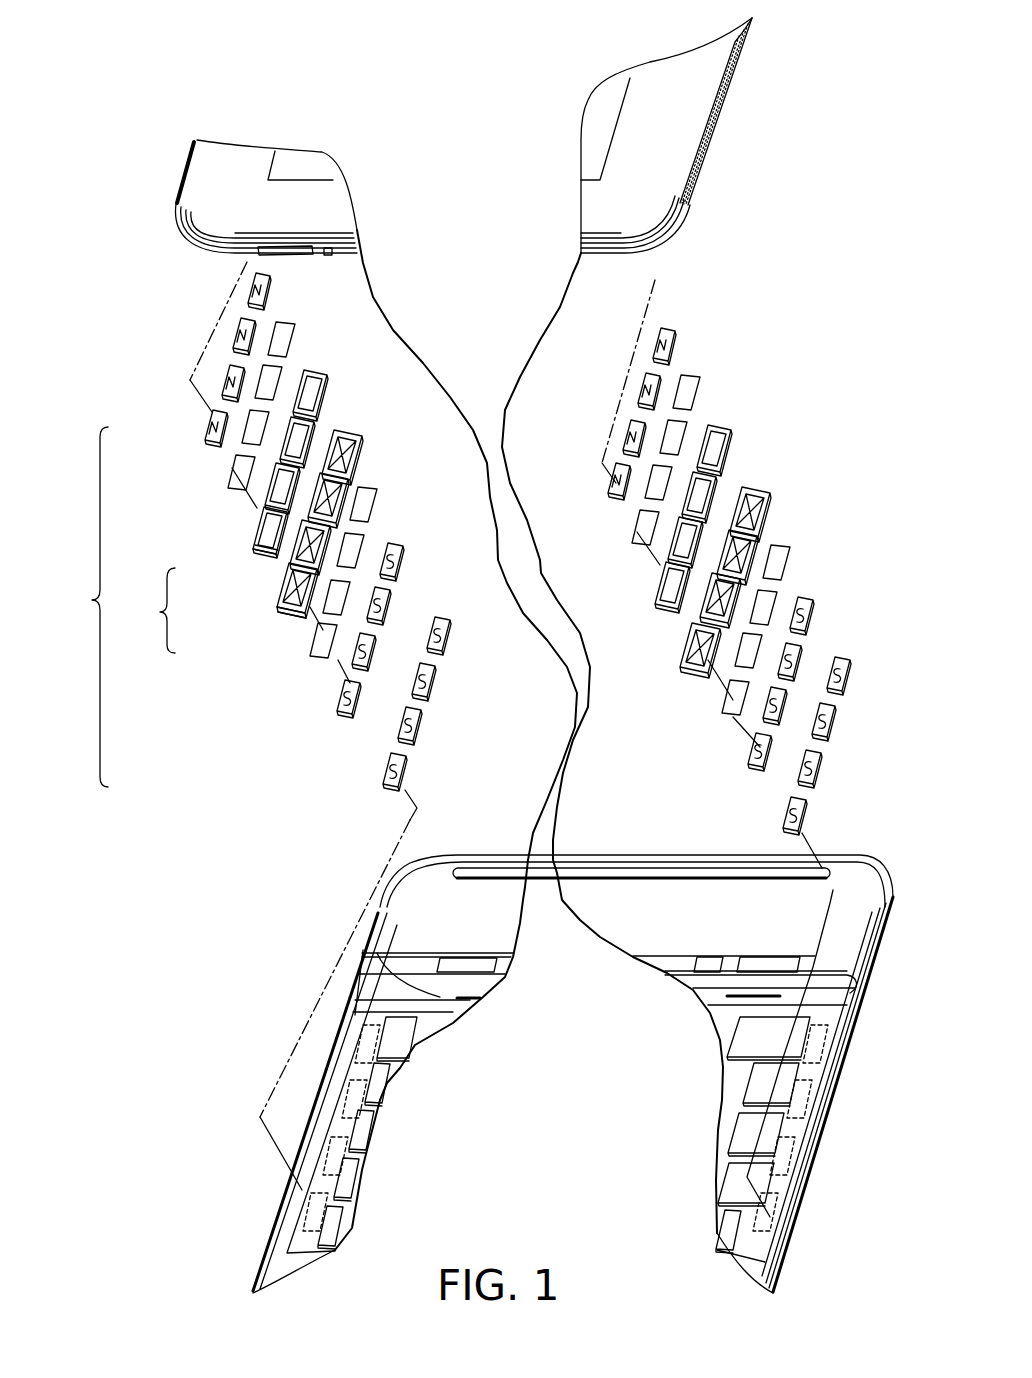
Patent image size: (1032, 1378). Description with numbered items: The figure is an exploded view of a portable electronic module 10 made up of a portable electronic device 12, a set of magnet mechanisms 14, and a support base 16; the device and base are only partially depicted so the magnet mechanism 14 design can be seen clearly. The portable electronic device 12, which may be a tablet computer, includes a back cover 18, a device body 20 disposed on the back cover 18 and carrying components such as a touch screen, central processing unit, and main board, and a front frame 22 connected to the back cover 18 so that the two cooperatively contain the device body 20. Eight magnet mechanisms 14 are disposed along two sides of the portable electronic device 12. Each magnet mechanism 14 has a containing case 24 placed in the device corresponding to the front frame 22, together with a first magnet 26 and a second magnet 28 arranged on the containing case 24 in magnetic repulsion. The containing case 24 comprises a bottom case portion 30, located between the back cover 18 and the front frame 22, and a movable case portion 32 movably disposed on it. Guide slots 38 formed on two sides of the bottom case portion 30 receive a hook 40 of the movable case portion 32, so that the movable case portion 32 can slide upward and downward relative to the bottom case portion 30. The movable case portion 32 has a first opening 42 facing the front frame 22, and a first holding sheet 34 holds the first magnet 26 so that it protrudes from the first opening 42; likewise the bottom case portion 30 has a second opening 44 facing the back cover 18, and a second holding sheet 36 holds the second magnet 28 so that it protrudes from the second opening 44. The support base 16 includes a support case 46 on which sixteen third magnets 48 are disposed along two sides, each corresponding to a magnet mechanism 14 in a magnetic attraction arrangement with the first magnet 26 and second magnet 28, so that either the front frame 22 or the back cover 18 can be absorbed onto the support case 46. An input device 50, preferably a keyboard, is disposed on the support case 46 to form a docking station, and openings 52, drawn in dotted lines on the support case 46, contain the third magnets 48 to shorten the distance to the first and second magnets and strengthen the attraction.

The portable electronic module 10 is at (190, 75).
The portable electronic device 12 is at (740, 67).
The magnet mechanism 14 is at (92, 600).
The support base 16 is at (492, 855).
The back cover 18 is at (330, 256).
The device body 20 is at (313, 163).
The front frame 22 is at (228, 173).
The containing case 24 is at (160, 612).
The first magnet 26 is at (203, 437).
The second magnet 28 is at (337, 703).
The bottom case portion 30 is at (290, 612).
The movable case portion 32 is at (257, 545).
The first holding sheet 34 is at (230, 480).
The second holding sheet 36 is at (316, 658).
The guide slot 38 is at (290, 618).
The hook 40 is at (258, 549).
The first opening 42 is at (258, 520).
The second opening 44 is at (283, 600).
The support case 46 is at (497, 927).
The third magnet 48 is at (388, 777).
The input device 50 is at (347, 1178).
The opening 52 is at (350, 1107).